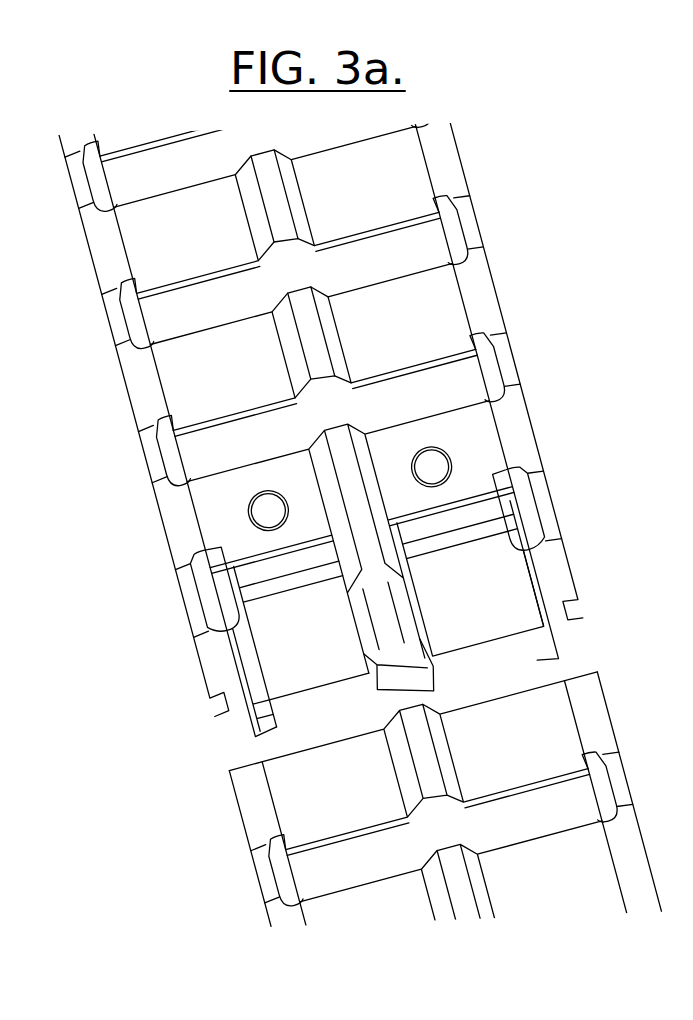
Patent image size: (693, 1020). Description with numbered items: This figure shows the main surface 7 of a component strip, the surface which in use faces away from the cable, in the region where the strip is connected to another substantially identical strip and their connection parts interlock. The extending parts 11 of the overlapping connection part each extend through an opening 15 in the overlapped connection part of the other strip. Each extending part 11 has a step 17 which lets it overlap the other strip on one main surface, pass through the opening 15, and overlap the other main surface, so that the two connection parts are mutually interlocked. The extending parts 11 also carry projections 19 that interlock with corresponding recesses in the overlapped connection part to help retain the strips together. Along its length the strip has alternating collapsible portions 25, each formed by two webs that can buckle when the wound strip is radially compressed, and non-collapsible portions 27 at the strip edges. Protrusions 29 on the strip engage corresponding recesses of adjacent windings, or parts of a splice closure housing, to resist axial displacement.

The main surface 7 is at (445, 328).
The extending parts 11 is at (482, 602).
The opening 15 is at (214, 607).
The step 17 is at (478, 530).
The projection 19 is at (268, 513).
The collapsible portions 25 is at (507, 367).
The non-collapsible portions 27 is at (405, 180).
The protrusions 29 is at (291, 336).